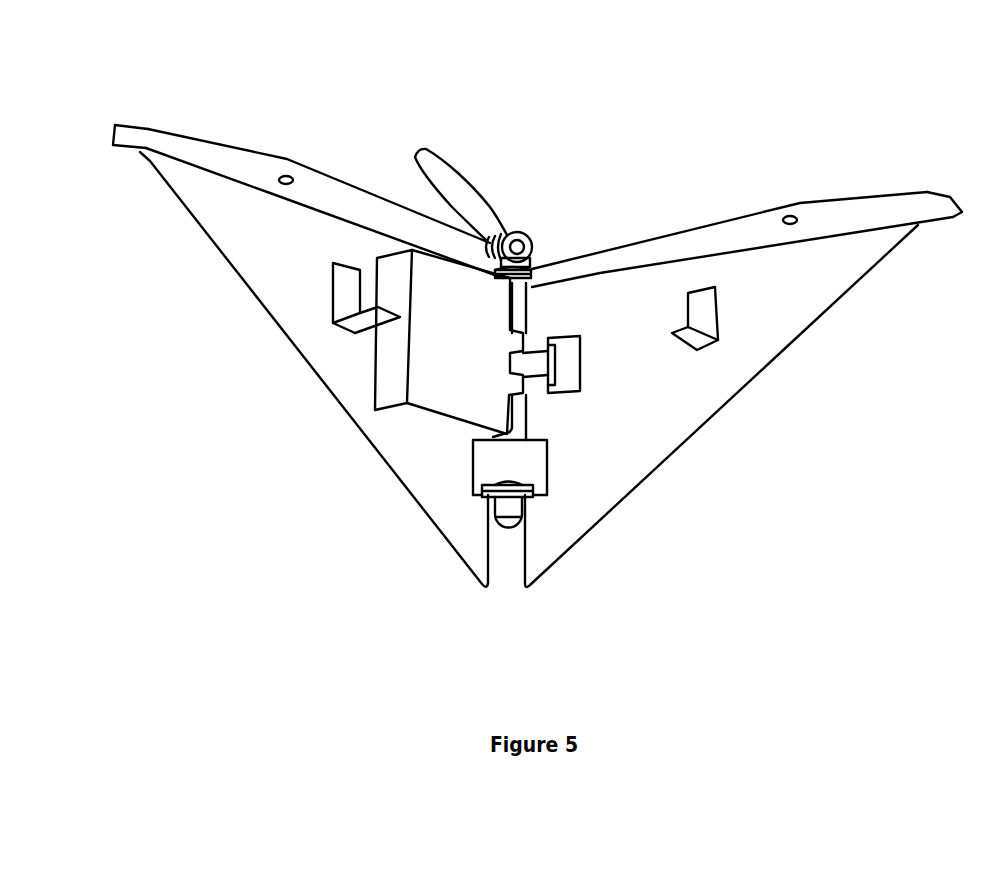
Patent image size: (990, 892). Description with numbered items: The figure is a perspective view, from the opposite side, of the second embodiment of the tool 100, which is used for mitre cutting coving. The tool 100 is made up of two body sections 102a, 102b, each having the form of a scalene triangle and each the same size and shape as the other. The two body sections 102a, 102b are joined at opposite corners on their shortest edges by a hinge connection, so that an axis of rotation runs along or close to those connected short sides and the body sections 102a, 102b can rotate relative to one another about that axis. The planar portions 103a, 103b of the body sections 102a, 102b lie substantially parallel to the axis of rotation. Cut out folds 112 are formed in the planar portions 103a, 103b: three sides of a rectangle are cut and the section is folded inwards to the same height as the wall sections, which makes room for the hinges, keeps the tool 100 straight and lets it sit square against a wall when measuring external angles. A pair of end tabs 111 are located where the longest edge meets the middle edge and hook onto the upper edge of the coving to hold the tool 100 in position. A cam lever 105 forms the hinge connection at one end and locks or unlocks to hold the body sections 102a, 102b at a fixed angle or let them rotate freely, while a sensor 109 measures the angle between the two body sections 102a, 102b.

The tool 100 is at (716, 554).
The body section 102a is at (718, 445).
The body section 102b is at (265, 391).
The planar portion 103a is at (595, 475).
The planar portion 103b is at (432, 463).
The cam lever 105 is at (517, 247).
The sensor 109 is at (528, 358).
The end tab 111 is at (125, 140).
The cut out fold 112 is at (340, 285).